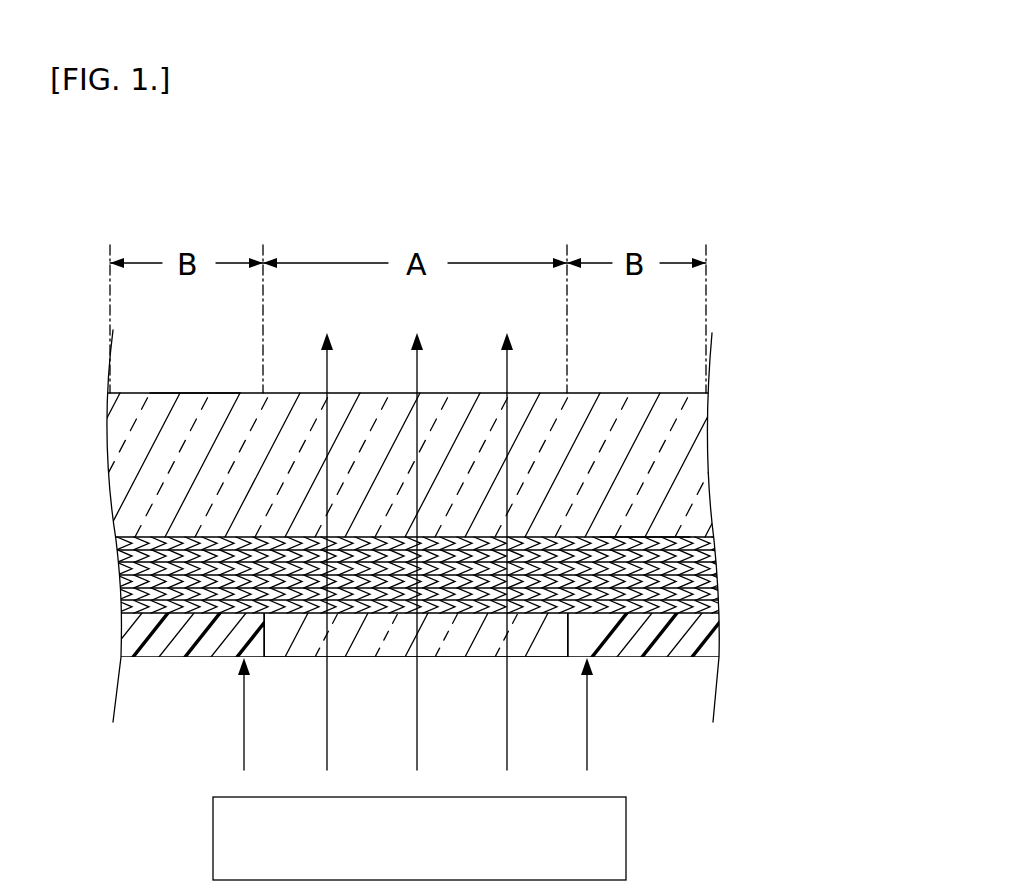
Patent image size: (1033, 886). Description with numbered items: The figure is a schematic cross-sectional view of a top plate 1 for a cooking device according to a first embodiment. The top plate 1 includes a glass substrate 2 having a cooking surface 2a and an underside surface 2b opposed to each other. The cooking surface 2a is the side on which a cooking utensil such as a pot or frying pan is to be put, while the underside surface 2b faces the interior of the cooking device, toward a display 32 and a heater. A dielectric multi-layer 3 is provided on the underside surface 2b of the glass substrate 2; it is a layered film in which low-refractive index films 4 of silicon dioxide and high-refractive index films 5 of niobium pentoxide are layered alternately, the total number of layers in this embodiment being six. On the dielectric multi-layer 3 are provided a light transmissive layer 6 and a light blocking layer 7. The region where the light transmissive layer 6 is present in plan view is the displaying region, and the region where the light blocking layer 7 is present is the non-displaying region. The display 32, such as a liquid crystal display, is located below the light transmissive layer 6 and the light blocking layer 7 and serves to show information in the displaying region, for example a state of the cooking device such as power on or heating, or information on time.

The top plate for a cooking device 1 is at (148, 185).
The glass substrate 2 is at (682, 467).
The cooking surface 2a is at (193, 393).
The underside surface 2b is at (645, 537).
The dielectric multi-layer 3 is at (770, 505).
The low-refractive index film 4 is at (718, 594).
The high-refractive index film 5 is at (719, 607).
The light transmissive layer 6 is at (294, 657).
The light blocking layer 7 is at (170, 657).
The display 32 is at (600, 843).